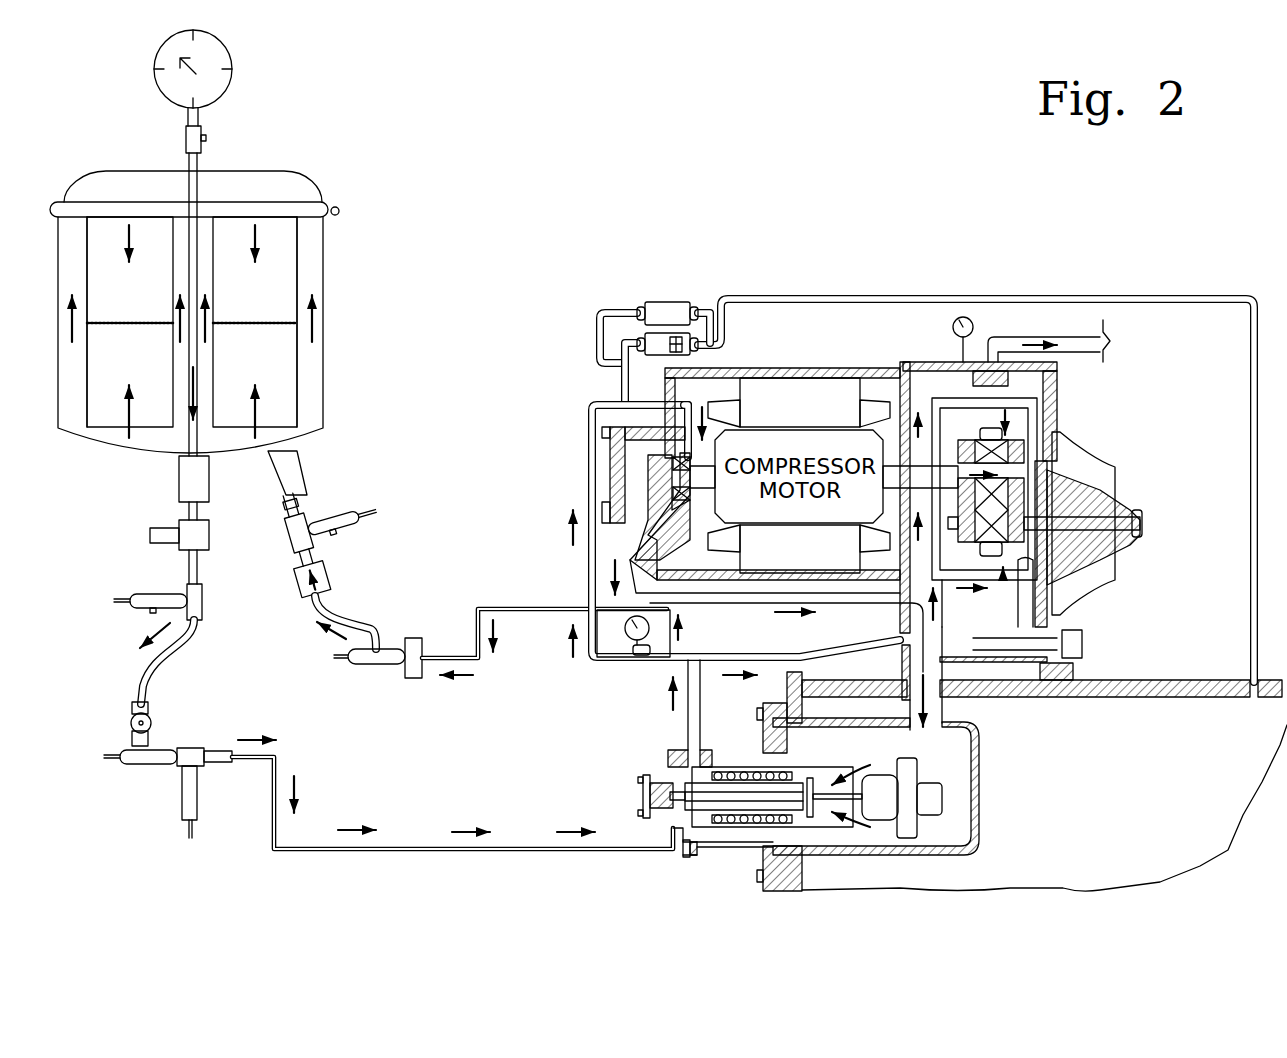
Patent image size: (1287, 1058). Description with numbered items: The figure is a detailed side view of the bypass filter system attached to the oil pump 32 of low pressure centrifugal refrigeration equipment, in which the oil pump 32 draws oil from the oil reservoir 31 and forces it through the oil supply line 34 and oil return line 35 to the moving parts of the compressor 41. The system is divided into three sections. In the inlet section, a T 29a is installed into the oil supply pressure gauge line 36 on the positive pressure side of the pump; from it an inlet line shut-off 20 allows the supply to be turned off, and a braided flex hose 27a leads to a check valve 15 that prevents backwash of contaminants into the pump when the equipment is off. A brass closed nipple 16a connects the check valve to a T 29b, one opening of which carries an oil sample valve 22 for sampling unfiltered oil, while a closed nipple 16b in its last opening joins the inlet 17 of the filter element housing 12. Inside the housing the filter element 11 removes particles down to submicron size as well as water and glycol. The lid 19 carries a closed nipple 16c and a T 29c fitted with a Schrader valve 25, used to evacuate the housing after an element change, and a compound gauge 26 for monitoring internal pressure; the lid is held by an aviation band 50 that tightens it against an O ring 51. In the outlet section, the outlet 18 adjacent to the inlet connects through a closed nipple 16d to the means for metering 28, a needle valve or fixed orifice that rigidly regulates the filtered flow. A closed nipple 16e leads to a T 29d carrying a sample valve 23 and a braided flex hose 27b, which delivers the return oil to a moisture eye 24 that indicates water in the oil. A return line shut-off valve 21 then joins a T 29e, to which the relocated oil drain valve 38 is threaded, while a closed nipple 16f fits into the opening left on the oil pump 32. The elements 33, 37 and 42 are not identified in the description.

The filter element 11 is at (119, 322).
The filter element housing 12 is at (323, 306).
The check valve 15 is at (333, 582).
The brass closed nipple 16a is at (312, 559).
The closed nipple 16b is at (300, 502).
The closed nipple 16c is at (198, 161).
The closed nipple 16d is at (189, 508).
The closed nipple 16e is at (189, 560).
The closed nipple 16f is at (220, 764).
The inlet 17 is at (302, 462).
The outlet 18 is at (179, 468).
The lid 19 is at (300, 174).
The inlet line shut-off 20 is at (368, 666).
The return line shut-off valve 21 is at (143, 766).
The oil sample valve 22 is at (364, 524).
The sample valve 23 is at (130, 605).
The moisture eye 24 is at (151, 723).
The Schrader valve 25 is at (206, 138).
The compound gauge 26 is at (232, 60).
The braided flex hose 27a is at (371, 622).
The braided flex hose 27b is at (194, 638).
The means for metering oil flow 28 is at (209, 534).
The T 29a is at (413, 678).
The T 29b is at (286, 512).
The T 29c is at (186, 139).
The T 29d is at (204, 602).
The T 29e is at (189, 748).
The oil reservoir 31 is at (995, 697).
The oil pump 32 is at (627, 768).
The oil pump 33 is at (735, 767).
The oil supply line 34 is at (688, 723).
The oil return line 35 is at (742, 612).
The oil supply pressure gauge line 36 is at (626, 650).
The suction fitting 37 is at (700, 855).
The oil drain valve 38 is at (182, 822).
The compressor 41 is at (1120, 437).
The turbine wheel 42 is at (1117, 565).
The aviation band 50 is at (339, 211).
The O ring 51 is at (312, 207).